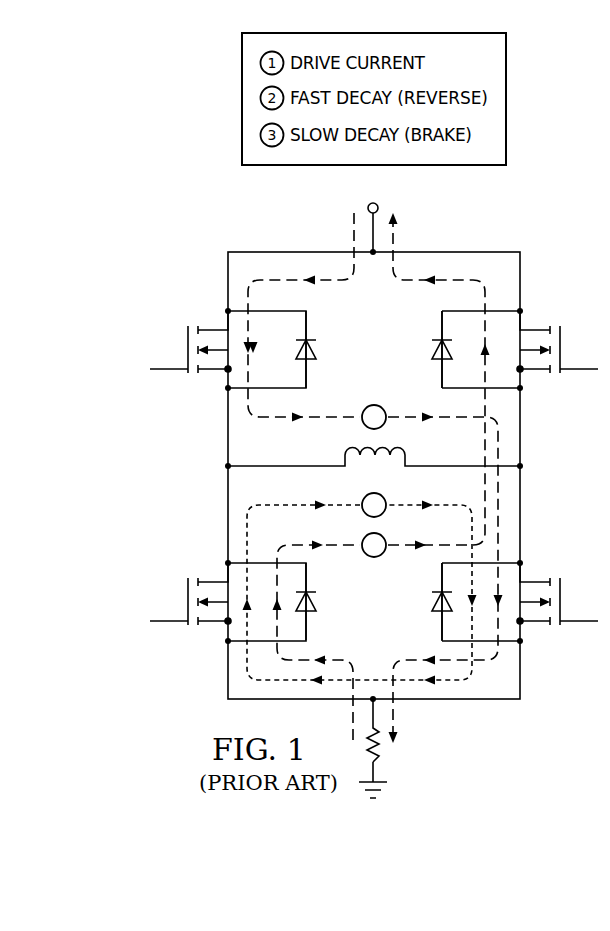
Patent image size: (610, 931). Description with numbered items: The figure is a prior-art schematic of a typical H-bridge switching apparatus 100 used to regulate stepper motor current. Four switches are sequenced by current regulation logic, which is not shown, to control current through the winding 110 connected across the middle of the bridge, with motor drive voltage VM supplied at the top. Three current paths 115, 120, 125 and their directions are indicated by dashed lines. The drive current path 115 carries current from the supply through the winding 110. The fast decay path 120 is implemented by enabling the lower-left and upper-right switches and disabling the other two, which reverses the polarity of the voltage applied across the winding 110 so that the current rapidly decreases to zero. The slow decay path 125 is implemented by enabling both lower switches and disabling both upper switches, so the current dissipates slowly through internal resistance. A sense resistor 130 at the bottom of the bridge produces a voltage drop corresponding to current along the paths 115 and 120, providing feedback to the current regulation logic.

The H-bridge switching apparatus 100 is at (284, 235).
The winding 110 is at (358, 452).
The current path 115 is at (373, 405).
The current path 120 is at (374, 558).
The current path 125 is at (365, 494).
The sense resistor 130 is at (381, 745).